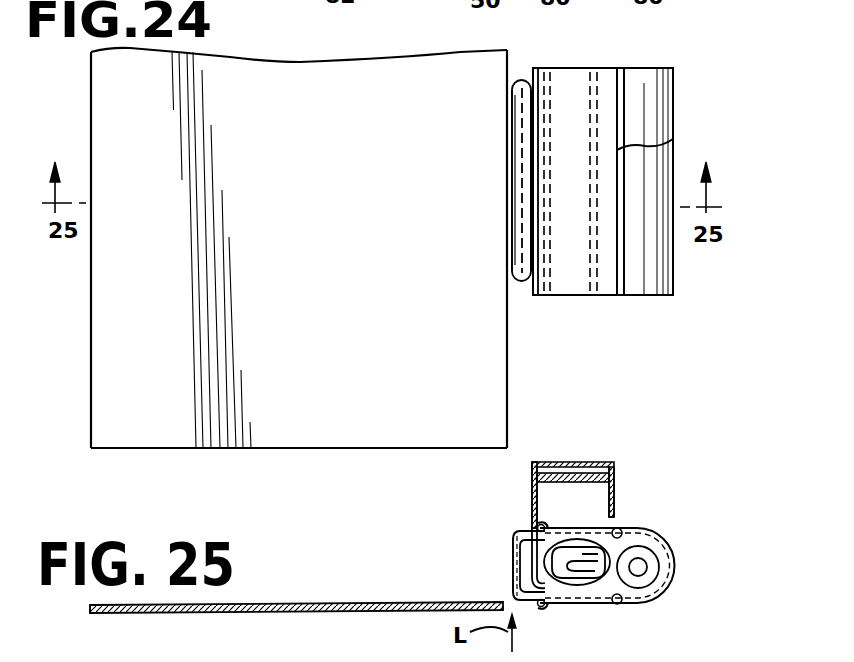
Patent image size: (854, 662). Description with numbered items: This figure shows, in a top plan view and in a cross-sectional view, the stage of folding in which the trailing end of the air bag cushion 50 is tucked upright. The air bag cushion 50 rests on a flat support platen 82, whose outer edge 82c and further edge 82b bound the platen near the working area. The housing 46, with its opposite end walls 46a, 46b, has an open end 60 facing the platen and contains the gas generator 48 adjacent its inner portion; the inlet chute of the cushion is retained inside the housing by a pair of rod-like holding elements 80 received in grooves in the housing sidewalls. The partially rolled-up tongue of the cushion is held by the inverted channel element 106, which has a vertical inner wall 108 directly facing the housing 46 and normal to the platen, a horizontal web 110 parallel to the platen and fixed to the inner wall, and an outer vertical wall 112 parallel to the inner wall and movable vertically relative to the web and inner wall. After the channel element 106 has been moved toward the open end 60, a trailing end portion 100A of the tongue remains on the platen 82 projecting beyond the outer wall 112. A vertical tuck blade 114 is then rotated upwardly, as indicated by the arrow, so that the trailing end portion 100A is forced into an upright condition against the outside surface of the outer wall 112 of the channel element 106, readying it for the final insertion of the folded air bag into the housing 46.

In FIG. 24, the support platen 82 is at (308, 384).
In FIG. 25, the support platen 82 is at (290, 612).
In FIG. 24, the panel bottom edge 82b is at (250, 448).
In FIG. 24, the outer edge of the support platen 82c is at (91, 404).
In FIG. 25, the outer edge of the support platen 82c is at (90, 607).
In FIG. 24, the open end of the housing 60 is at (536, 84).
In FIG. 25, the open end of the housing 60 is at (538, 527).
In FIG. 24, the housing 46 is at (673, 112).
In FIG. 25, the housing 46 is at (655, 531).
In FIG. 24, the end wall of the housing 46a is at (638, 68).
In FIG. 24, the end wall of the housing 46b is at (656, 296).
In FIG. 25, the gas generator 48 is at (660, 595).
In FIG. 24, the air bag cushion 50 is at (519, 229).
In FIG. 25, the air bag cushion 50 is at (533, 558).
In FIG. 25, the rod-like holding elements 80 is at (620, 529).
In FIG. 24, the trailing end portion of the tongue 100A is at (520, 134).
In FIG. 25, the trailing end portion of the tongue 100A is at (513, 531).
In FIG. 24, the channel element 106 is at (575, 297).
In FIG. 25, the channel element 106 is at (563, 460).
In FIG. 24, the inner wall of the channel element 108 is at (673, 140).
In FIG. 25, the inner wall of the channel element 108 is at (613, 468).
In FIG. 24, the horizontal web 110 is at (570, 163).
In FIG. 25, the horizontal web 110 is at (574, 478).
In FIG. 24, the outer wall of the channel element 112 is at (545, 100).
In FIG. 25, the outer wall of the channel element 112 is at (532, 483).
In FIG. 24, the tuck blade 114 is at (513, 182).
In FIG. 25, the tuck blade 114 is at (513, 585).